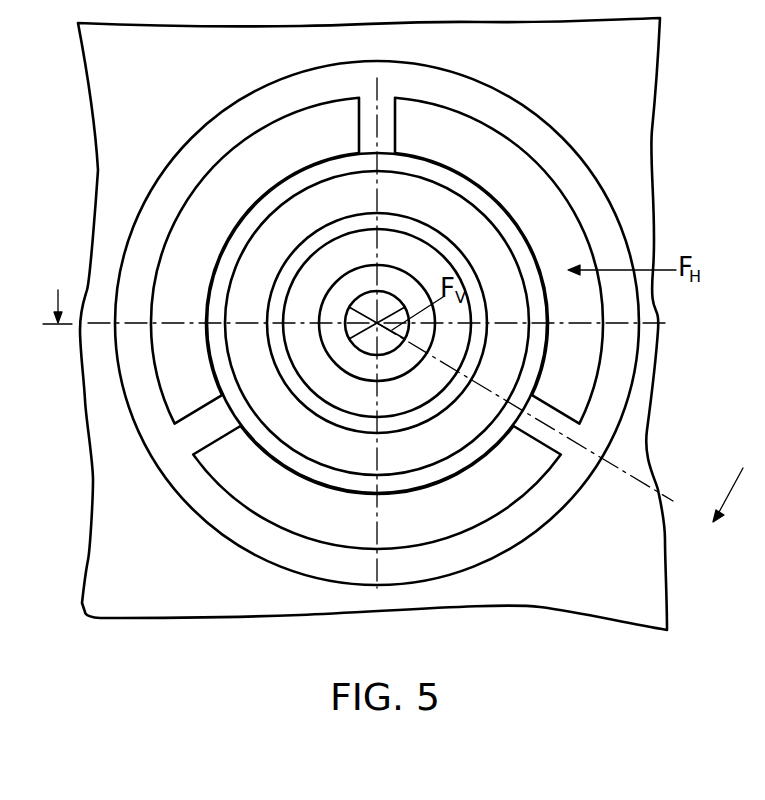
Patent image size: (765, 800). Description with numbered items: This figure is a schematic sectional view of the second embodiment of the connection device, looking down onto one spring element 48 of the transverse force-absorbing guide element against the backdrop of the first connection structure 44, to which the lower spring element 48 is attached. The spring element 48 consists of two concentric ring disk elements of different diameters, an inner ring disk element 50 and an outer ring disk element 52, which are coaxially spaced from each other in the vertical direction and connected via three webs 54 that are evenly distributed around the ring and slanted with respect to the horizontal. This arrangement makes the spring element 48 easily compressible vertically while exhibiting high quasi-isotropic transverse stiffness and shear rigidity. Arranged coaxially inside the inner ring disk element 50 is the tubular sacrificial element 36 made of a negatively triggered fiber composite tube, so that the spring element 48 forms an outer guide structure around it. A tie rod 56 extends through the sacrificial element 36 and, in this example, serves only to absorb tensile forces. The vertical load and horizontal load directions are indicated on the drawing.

The sacrificial element 36 is at (408, 219).
The first connection structure 44 is at (115, 478).
The spring element 48 is at (572, 103).
The inner ring disk element 50 is at (511, 229).
The outer ring disk element 52 is at (483, 90).
The webs 54 is at (388, 128).
The tie rod 56 is at (340, 300).